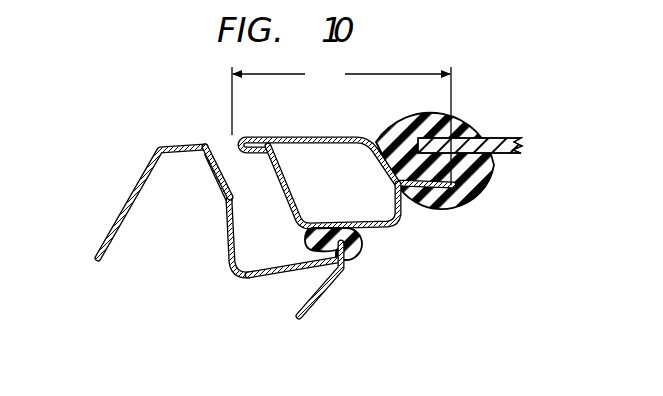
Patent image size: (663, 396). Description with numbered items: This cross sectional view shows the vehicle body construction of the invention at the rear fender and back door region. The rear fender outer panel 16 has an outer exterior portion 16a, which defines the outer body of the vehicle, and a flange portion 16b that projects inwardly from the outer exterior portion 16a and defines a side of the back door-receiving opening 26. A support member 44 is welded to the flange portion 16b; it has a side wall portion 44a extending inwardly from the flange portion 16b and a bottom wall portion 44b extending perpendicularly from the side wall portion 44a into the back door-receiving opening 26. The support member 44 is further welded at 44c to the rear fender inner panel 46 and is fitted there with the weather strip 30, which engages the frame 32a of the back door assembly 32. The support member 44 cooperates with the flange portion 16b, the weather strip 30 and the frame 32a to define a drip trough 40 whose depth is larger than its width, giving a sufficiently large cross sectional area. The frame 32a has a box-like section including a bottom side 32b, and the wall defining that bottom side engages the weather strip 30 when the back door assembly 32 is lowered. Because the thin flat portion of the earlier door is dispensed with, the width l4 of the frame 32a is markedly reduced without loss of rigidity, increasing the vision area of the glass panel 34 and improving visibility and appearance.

The rear fender outer panel 16 is at (161, 175).
The outer exterior portion 16a is at (178, 148).
The flange portion 16b is at (222, 162).
The back door-receiving opening 26 is at (536, 197).
The weather strip 30 is at (371, 247).
The back door assembly 32 is at (368, 170).
The frame 32a is at (307, 138).
The bottom side 32b is at (391, 227).
The glass panel 34 is at (500, 138).
The drip trough 40 is at (263, 240).
The support member 44 is at (247, 246).
The side wall portion 44a is at (213, 170).
The bottom wall portion 44b is at (242, 279).
The weld location 44c is at (295, 273).
The rear fender inner panel 46 is at (326, 286).
The width of the frame l4 is at (341, 122).